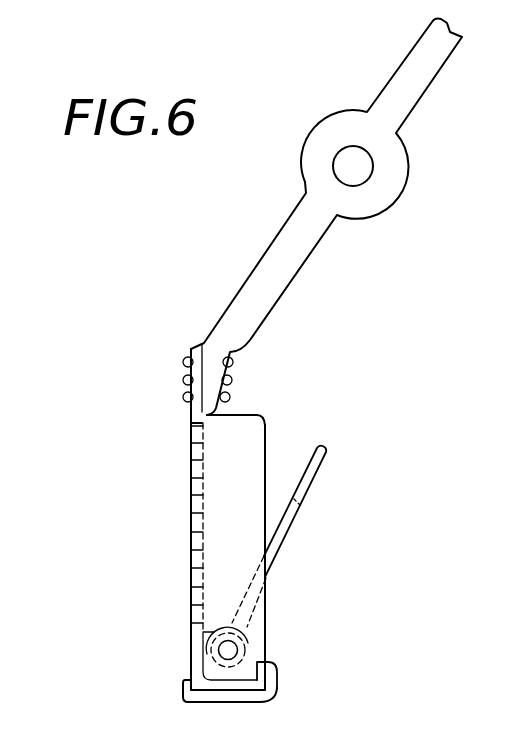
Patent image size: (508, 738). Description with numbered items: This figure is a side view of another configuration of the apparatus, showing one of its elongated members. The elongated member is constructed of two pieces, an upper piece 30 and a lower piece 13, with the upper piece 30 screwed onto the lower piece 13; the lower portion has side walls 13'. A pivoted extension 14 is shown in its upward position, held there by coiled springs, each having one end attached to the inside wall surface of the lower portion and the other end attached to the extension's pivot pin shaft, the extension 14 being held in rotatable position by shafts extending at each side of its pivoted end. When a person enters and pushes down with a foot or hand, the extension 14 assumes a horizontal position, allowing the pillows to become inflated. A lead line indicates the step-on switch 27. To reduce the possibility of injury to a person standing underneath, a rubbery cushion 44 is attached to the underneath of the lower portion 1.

The upper piece 30 is at (267, 253).
The lower piece 13 is at (195, 519).
The side wall 13' is at (265, 420).
The extension 14 is at (288, 538).
The step-on switch 27 is at (277, 672).
The rubbery cushion 44 is at (187, 703).
The lower portion 1 is at (504, 422).